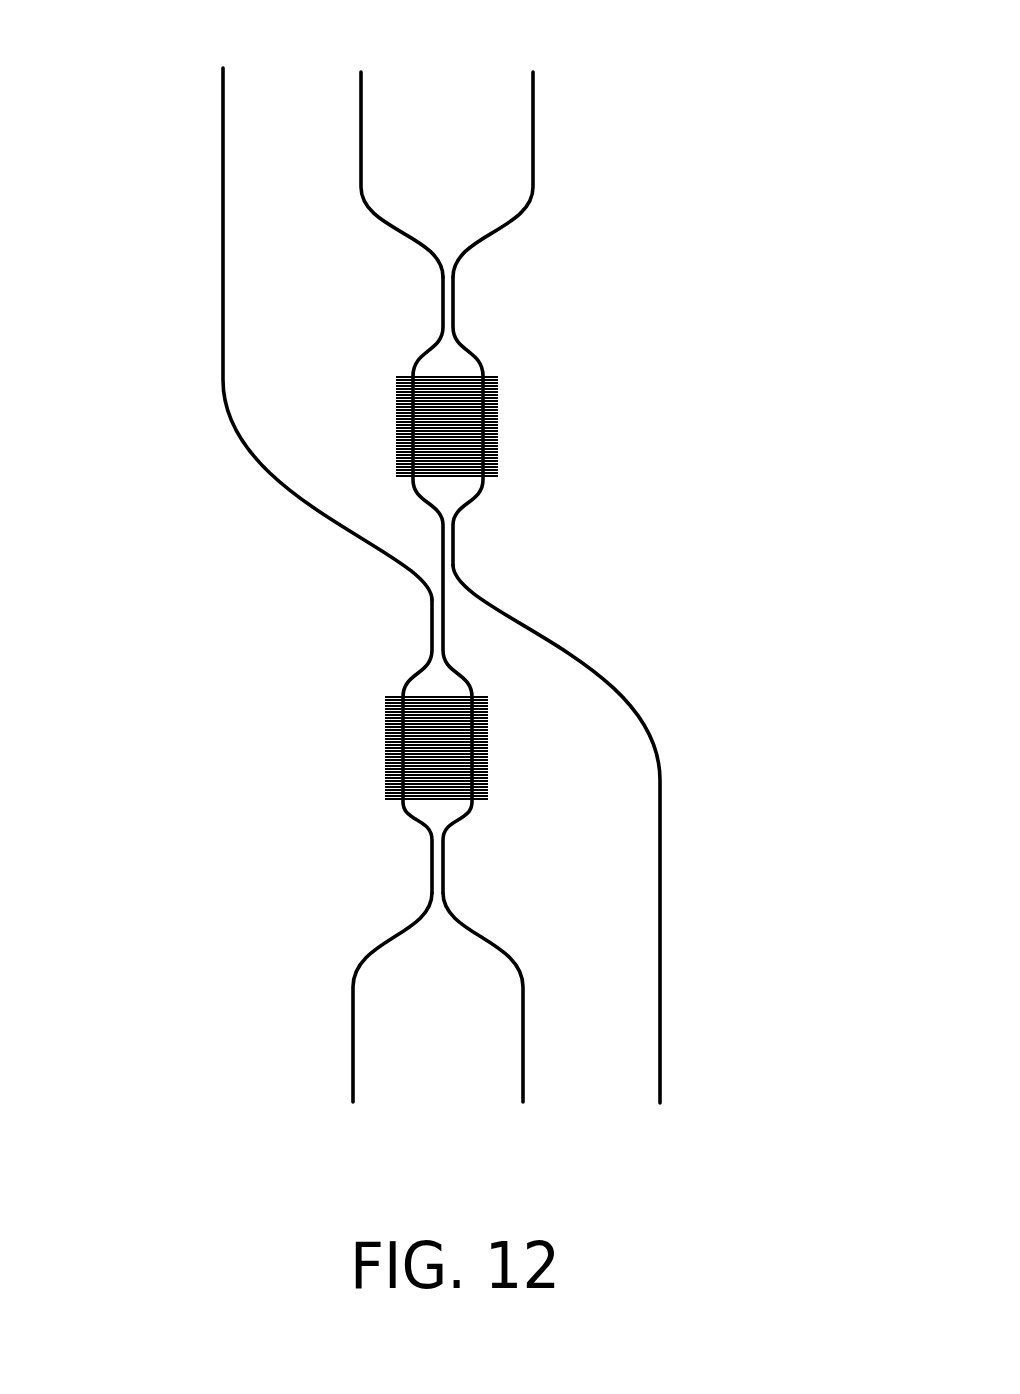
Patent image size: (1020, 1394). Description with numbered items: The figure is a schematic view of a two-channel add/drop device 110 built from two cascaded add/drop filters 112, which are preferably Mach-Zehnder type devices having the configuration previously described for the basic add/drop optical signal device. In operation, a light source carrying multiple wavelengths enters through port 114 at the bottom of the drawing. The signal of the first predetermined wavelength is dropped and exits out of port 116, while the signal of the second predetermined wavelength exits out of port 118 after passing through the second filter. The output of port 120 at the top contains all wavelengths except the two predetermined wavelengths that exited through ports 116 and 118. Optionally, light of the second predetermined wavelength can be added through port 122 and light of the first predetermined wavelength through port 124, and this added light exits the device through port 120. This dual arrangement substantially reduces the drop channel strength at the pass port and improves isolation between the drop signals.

The 2-channel add/drop device 110 is at (750, 134).
The add/drop filter 112 is at (524, 405).
The port 114 is at (352, 1083).
The port 116 is at (524, 1083).
The port 118 is at (663, 1076).
The port 120 is at (533, 89).
The port 122 is at (360, 88).
The port 124 is at (223, 92).